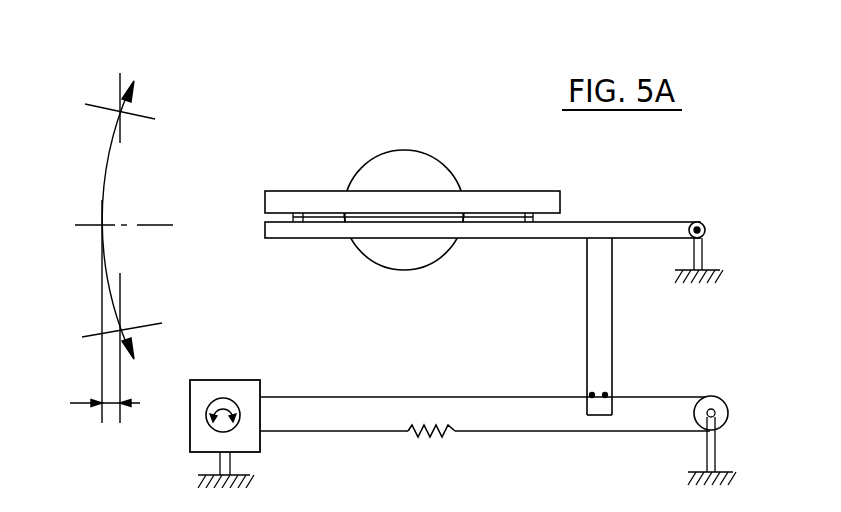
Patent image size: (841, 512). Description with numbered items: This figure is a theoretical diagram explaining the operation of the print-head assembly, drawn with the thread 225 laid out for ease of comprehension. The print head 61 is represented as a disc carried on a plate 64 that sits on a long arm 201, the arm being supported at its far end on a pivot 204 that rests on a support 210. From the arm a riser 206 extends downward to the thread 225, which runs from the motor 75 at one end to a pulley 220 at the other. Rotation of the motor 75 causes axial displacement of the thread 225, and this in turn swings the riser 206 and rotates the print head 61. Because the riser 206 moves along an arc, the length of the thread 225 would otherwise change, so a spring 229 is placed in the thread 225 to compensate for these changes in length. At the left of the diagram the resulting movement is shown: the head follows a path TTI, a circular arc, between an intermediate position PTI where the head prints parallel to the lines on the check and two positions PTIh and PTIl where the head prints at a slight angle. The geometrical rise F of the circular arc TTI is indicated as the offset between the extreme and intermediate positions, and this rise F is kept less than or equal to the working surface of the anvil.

The print head 61 is at (396, 152).
The upper plate 64 is at (510, 190).
The arm 201 is at (489, 235).
The pivot 204 is at (699, 221).
The pivot support 210 is at (703, 247).
The riser 206 is at (597, 336).
The thread 225 is at (426, 397).
The spring 229 is at (437, 437).
The pulley 220 is at (708, 396).
The motor 75 is at (245, 380).
The path TTI is at (98, 203).
The angled position PTIh is at (152, 106).
The intermediate position PTI is at (187, 200).
The angled position PTIl is at (147, 322).
The geometrical rise F is at (78, 391).